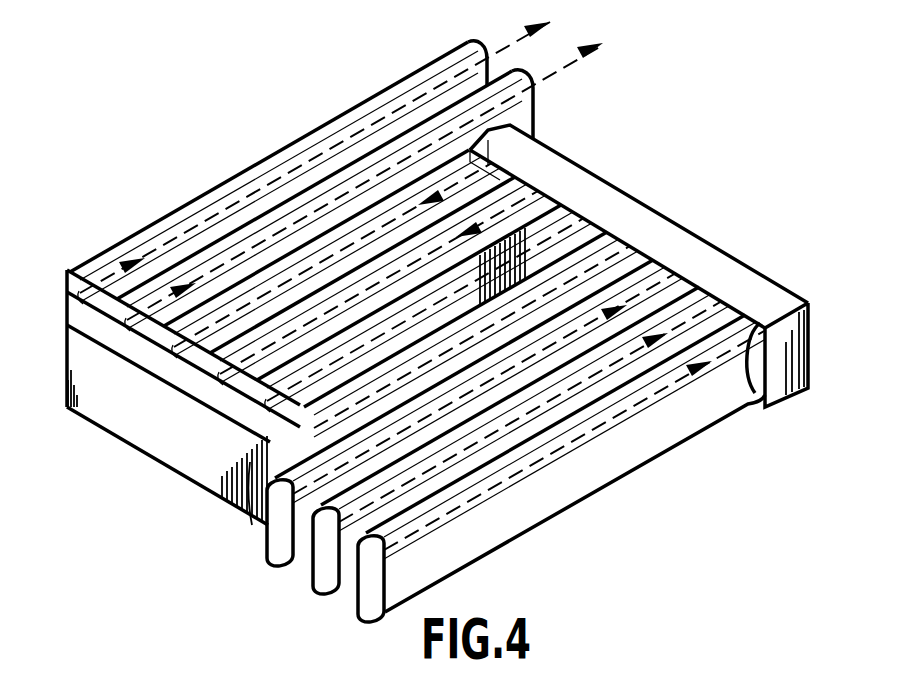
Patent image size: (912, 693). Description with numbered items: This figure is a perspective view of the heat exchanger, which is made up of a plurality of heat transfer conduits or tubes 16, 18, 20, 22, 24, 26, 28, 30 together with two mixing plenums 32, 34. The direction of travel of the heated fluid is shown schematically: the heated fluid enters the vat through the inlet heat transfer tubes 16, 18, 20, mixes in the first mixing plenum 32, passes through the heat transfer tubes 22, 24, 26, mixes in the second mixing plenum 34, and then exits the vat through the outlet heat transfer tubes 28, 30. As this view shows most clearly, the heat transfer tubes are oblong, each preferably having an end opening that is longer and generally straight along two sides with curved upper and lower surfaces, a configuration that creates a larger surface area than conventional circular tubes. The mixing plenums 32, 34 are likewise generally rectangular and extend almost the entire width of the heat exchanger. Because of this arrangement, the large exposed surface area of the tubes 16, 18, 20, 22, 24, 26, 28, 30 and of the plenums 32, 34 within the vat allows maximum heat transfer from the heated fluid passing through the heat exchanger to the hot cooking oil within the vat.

The inlet heat transfer tube 16 is at (668, 427).
The inlet heat transfer tube 18 is at (750, 287).
The inlet heat transfer tube 20 is at (645, 258).
The heat transfer tube 22 is at (237, 503).
The heat transfer tube 24 is at (272, 370).
The heat transfer tube 26 is at (512, 126).
The outlet heat transfer tube 28 is at (322, 188).
The outlet heat transfer tube 30 is at (372, 103).
The mixing plenum 32 is at (625, 199).
The mixing plenum 34 is at (97, 393).